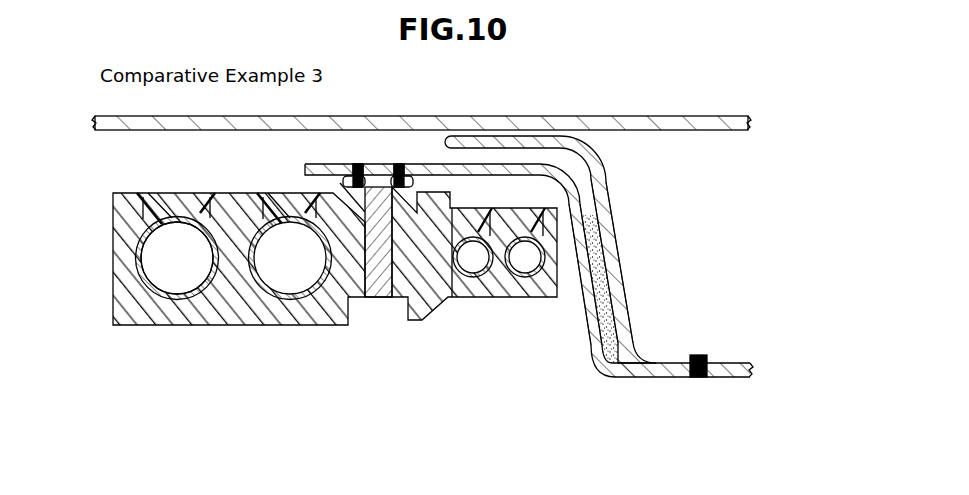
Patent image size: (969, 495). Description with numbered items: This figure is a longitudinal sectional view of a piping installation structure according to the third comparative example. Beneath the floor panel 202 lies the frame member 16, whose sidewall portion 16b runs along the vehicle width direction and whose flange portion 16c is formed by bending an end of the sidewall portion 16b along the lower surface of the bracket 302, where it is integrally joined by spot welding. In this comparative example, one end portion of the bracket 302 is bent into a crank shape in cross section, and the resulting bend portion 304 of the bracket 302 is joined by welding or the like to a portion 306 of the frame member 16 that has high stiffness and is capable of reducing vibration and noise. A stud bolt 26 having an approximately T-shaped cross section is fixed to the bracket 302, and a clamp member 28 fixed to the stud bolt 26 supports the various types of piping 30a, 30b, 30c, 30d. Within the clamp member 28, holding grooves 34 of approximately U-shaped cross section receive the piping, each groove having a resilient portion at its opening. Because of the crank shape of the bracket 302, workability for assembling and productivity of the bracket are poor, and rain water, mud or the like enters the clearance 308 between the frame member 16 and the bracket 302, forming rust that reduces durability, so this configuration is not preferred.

The floor panel 202 is at (627, 117).
The bracket 302 is at (433, 163).
The clearance 308 is at (532, 138).
The frame member 16 is at (609, 241).
The sidewall portion 16b is at (622, 281).
The flange portion 16c is at (513, 200).
The portion of the frame member 306 is at (700, 360).
The bend portion 304 is at (590, 365).
The clamp member 28 is at (113, 239).
The piping 30a is at (135, 303).
The holding groove 34 is at (188, 278).
The piping 30b is at (280, 300).
The stud bolt 26 is at (378, 272).
The piping 30c is at (467, 280).
The piping 30d is at (518, 280).